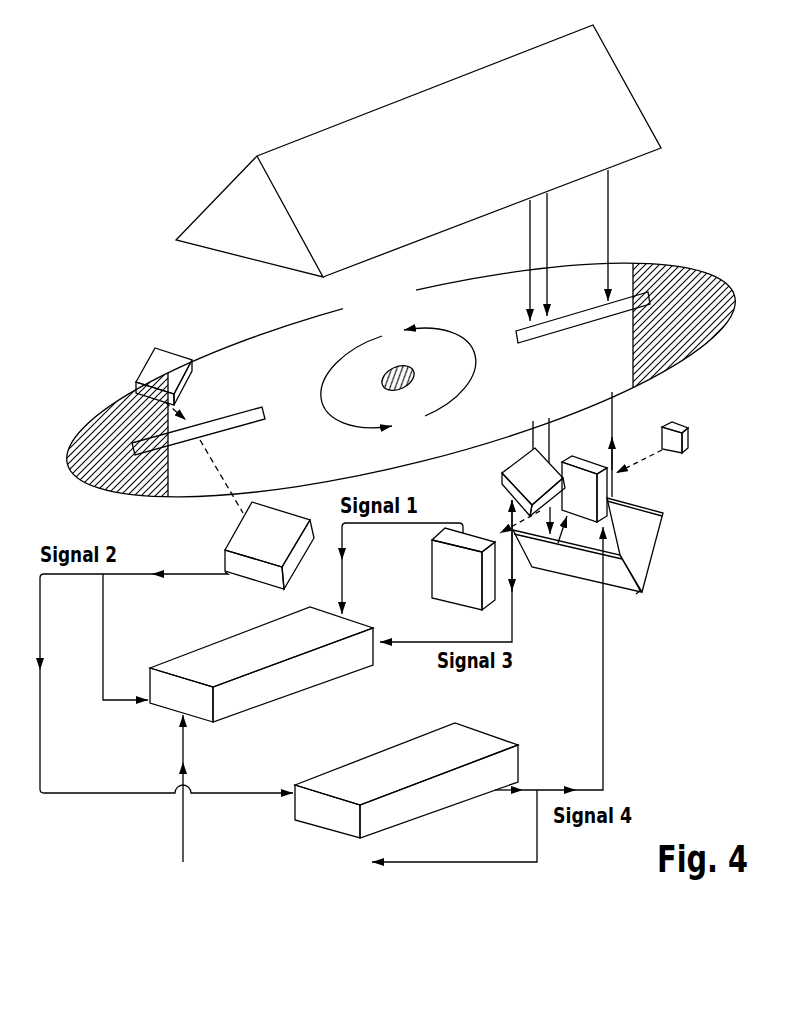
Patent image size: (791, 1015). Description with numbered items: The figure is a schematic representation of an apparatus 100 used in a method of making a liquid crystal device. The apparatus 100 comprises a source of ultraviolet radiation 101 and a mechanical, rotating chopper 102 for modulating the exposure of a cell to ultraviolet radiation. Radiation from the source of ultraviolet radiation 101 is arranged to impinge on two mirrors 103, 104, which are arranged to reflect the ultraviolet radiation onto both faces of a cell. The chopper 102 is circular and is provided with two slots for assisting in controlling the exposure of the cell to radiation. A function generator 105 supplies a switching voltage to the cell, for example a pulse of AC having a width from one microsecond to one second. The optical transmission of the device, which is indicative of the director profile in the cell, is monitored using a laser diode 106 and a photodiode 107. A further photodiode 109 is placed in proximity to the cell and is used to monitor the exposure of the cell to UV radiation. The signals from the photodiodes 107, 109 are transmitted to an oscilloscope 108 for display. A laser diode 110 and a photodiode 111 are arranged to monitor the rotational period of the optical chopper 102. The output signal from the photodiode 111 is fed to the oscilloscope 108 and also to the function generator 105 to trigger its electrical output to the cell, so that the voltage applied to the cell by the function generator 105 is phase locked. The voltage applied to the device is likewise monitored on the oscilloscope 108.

The apparatus 100 is at (132, 172).
The source of ultraviolet radiation 101 is at (316, 147).
The mechanical rotating chopper 102 is at (242, 367).
The mirror 103 is at (565, 567).
The mirror 104 is at (658, 552).
The function generator 105 is at (472, 742).
The laser diode 106 is at (684, 452).
The photodiode 107 is at (438, 585).
The oscilloscope 108 is at (303, 690).
The photodiode 109 is at (508, 470).
The laser diode 110 is at (146, 370).
The photodiode 111 is at (233, 540).